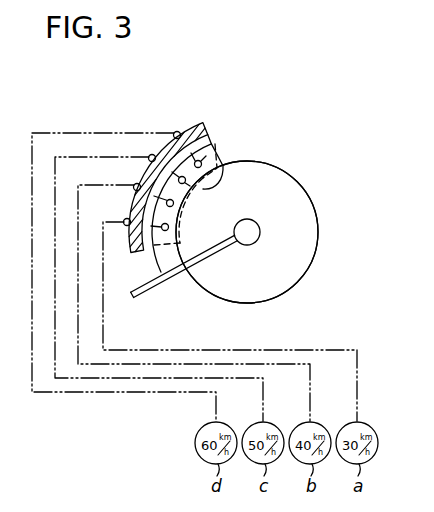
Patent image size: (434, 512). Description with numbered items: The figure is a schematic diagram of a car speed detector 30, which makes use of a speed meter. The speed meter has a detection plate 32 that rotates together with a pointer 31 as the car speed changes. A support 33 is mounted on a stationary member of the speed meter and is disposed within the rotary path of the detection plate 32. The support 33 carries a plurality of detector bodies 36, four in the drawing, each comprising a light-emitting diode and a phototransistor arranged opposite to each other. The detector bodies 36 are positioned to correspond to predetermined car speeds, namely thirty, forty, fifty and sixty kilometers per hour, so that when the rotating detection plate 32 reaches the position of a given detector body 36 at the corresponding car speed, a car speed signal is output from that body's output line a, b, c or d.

The car speed detector 30 is at (263, 161).
The pointer 31 is at (160, 300).
The detection plate 32 is at (297, 267).
The support 33 is at (193, 122).
The detector body 36 is at (226, 164).